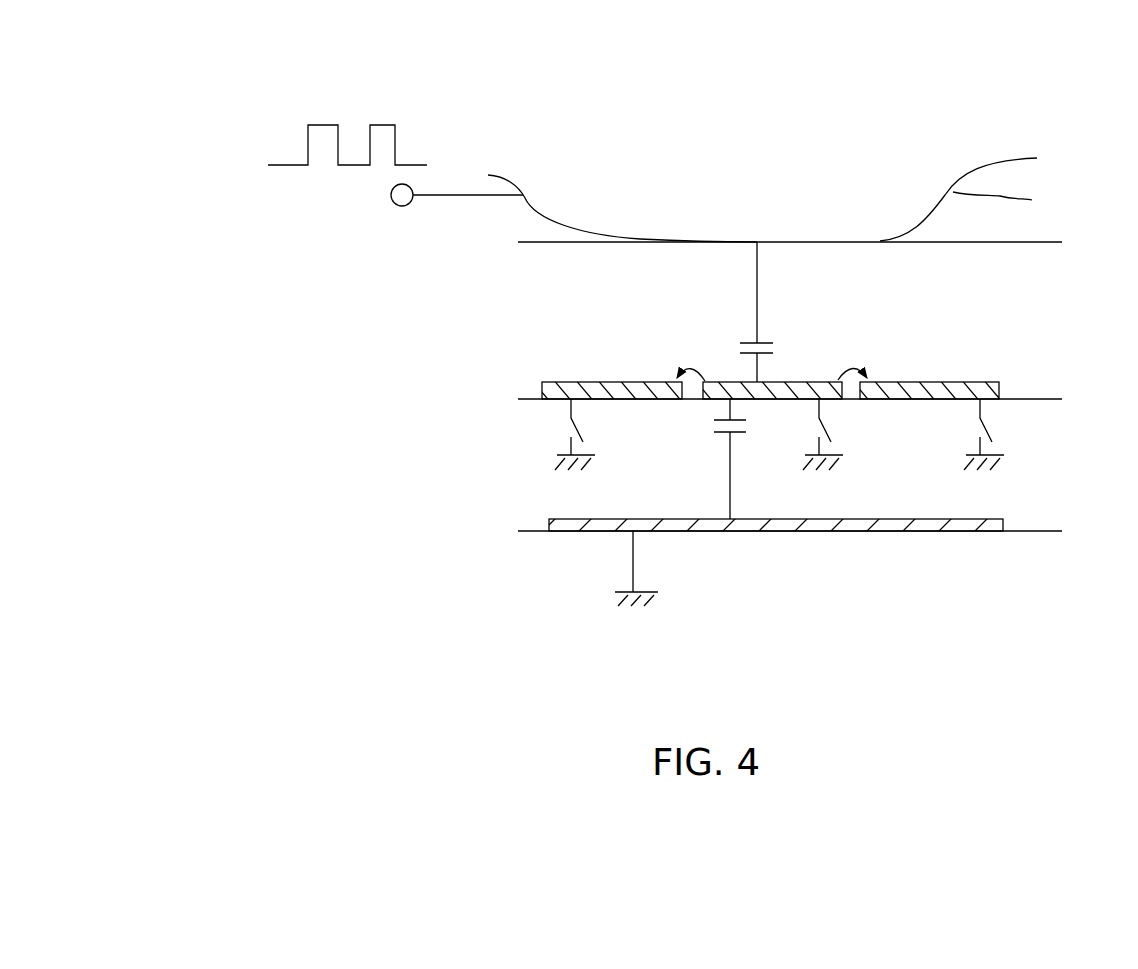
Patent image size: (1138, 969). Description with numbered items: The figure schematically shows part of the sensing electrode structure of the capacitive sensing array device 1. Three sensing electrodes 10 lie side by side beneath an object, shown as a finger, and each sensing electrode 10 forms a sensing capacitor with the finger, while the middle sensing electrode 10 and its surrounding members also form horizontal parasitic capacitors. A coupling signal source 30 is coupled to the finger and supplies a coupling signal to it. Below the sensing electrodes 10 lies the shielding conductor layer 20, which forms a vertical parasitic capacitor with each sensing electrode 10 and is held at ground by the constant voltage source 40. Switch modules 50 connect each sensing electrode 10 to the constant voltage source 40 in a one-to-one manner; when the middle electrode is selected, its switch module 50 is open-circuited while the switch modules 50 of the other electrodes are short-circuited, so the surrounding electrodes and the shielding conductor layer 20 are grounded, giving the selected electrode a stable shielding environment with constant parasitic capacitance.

The capacitive sensing array device 1 is at (828, 186).
The sensing electrodes 10 is at (560, 385).
The shielding conductor layer 20 is at (813, 522).
The coupling signal source 30 is at (285, 206).
The constant voltage source 40 is at (604, 601).
The switch modules 50 is at (546, 433).